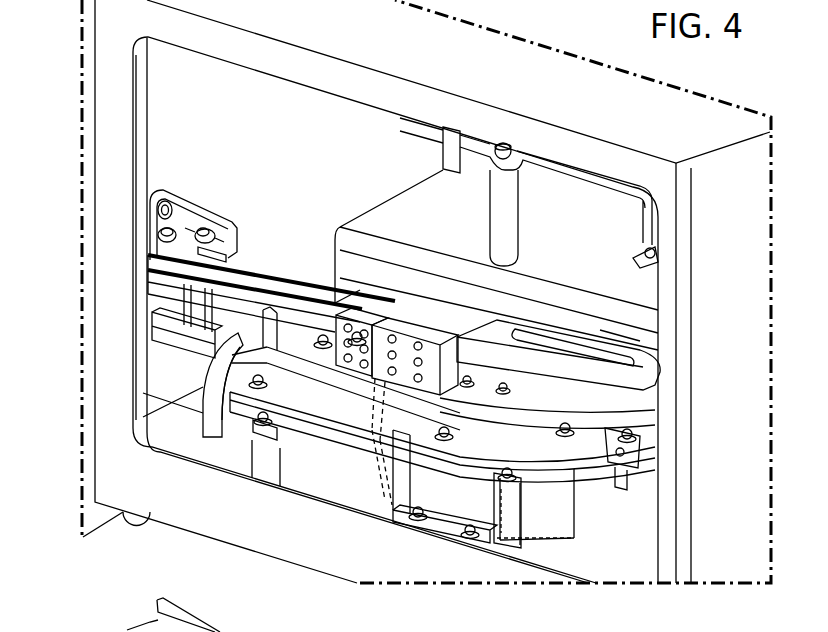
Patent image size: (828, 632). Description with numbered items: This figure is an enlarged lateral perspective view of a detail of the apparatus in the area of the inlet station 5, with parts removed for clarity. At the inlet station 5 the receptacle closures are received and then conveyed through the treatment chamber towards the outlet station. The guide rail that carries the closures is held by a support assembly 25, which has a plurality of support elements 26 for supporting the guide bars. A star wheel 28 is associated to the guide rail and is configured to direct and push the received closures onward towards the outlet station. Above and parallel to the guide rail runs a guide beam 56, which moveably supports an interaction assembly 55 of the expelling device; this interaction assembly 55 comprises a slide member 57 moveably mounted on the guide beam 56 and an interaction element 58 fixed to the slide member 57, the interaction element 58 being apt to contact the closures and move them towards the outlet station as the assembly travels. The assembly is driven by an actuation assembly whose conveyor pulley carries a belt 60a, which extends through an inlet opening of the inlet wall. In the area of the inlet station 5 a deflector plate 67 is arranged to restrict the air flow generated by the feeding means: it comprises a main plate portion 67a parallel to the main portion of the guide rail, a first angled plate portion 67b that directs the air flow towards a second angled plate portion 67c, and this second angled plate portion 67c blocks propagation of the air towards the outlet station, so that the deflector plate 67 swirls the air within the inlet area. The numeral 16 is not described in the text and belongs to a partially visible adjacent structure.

The inlet station 5 is at (629, 343).
The base 16 is at (102, 631).
The support assembly 25 is at (224, 443).
The support elements 26 is at (152, 328).
The star wheel 28 is at (541, 395).
The interaction assembly 55 is at (400, 323).
The guide beam 56 is at (277, 277).
The slide member 57 is at (424, 307).
The interaction element 58 is at (375, 406).
The belt 60a is at (649, 466).
The deflector plate 67 is at (467, 489).
The main plate portion 67a is at (440, 498).
The first angled plate portion 67b is at (567, 516).
The second angled plate portion 67c is at (397, 477).